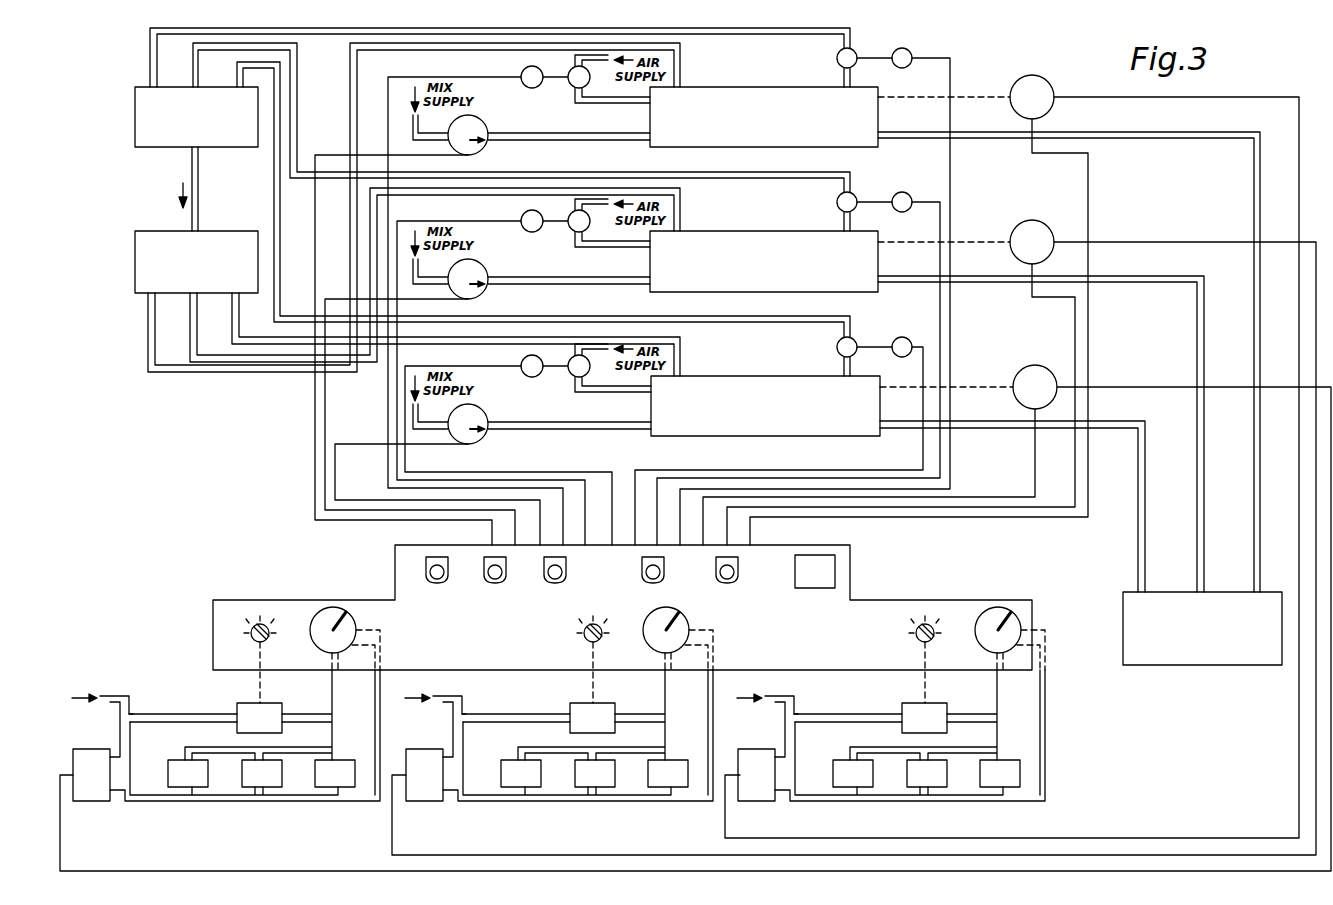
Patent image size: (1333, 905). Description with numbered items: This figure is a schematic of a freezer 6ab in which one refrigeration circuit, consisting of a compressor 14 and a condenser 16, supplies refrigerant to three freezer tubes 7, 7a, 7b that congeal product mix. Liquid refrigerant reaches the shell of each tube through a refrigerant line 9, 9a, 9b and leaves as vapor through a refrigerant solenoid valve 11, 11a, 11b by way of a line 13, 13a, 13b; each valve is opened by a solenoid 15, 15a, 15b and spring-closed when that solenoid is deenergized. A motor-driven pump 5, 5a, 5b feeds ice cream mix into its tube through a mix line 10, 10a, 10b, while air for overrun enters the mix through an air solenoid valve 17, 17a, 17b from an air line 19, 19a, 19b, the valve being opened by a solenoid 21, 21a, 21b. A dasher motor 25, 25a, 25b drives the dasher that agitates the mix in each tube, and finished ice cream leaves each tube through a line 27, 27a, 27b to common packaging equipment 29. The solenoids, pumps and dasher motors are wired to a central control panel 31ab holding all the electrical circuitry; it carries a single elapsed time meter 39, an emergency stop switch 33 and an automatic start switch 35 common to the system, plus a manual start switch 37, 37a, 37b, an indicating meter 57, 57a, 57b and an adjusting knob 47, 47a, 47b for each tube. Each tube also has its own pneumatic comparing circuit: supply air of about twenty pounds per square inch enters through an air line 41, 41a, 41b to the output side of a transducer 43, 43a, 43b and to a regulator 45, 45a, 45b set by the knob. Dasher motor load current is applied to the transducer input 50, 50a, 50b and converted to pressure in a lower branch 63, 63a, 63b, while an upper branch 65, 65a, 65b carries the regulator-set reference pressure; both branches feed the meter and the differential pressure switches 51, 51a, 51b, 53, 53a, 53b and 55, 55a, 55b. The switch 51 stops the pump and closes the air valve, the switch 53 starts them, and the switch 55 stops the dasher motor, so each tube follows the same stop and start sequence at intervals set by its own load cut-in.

The pump 5 is at (486, 121).
The pump 5a is at (486, 266).
The pump 5b is at (486, 411).
The freezer 6ab is at (112, 77).
The freezer tube 7 is at (775, 85).
The freezer tube 7a is at (775, 229).
The freezer tube 7b is at (775, 373).
The refrigerant line 9 is at (160, 378).
The refrigerant line 9a is at (210, 370).
The refrigerant line 9b is at (262, 360).
The mix line 10 is at (505, 145).
The mix line 10a is at (505, 289).
The mix line 10b is at (505, 434).
The refrigerant solenoid valve 11 is at (852, 51).
The refrigerant solenoid valve 11a is at (852, 195).
The refrigerant solenoid valve 11b is at (852, 340).
The line 13 is at (838, 64).
The line 13a is at (838, 208).
The line 13b is at (838, 353).
The compressor 14 is at (135, 120).
The solenoid 15 is at (897, 50).
The solenoid 15a is at (897, 193).
The solenoid 15b is at (897, 338).
The condenser 16 is at (135, 263).
The air solenoid valve 17 is at (572, 87).
The air solenoid valve 17a is at (572, 231).
The air solenoid valve 17b is at (572, 376).
The air line 19 is at (588, 105).
The air line 19a is at (606, 247).
The air line 19b is at (606, 392).
The solenoid 21 is at (521, 73).
The solenoid 21a is at (521, 217).
The solenoid 21b is at (521, 362).
The dasher motor 25 is at (1019, 76).
The dasher motor 25a is at (1022, 221).
The dasher motor 25b is at (1024, 366).
The line 27 is at (1258, 572).
The line 27a is at (1203, 572).
The line 27b is at (1144, 572).
The packaging equipment 29 is at (1180, 665).
The central control panel 31ab is at (852, 567).
The emergency stop switch 33 is at (726, 584).
The automatic start switch 35 is at (652, 584).
The manual start switch 37 is at (554, 584).
The manual start switch 37a is at (494, 584).
The manual start switch 37b is at (436, 584).
The elapsed time meter 39 is at (808, 590).
The air line 41 is at (775, 711).
The air line 41a is at (447, 711).
The air line 41b is at (134, 704).
The transducer 43 is at (910, 752).
The transducer 43a is at (572, 754).
The transducer 43b is at (60, 776).
The regulator 45 is at (938, 705).
The regulator 45a is at (611, 705).
The regulator 45b is at (266, 703).
The adjusting knob 47 is at (904, 659).
The adjusting knob 47a is at (562, 659).
The adjusting knob 47b is at (261, 644).
The transducer input 50 is at (756, 795).
The transducer input 50a is at (423, 798).
The transducer input 50b is at (90, 802).
The differential pressure switch 51 is at (841, 760).
The differential pressure switch 51a is at (507, 760).
The differential pressure switch 51b is at (168, 766).
The differential pressure switch 53 is at (925, 800).
The differential pressure switch 53a is at (591, 802).
The differential pressure switch 53b is at (252, 787).
The differential pressure switch 55 is at (998, 798).
The differential pressure switch 55a is at (666, 799).
The differential pressure switch 55b is at (322, 787).
The meter 57 is at (995, 638).
The meter 57a is at (704, 638).
The meter 57b is at (357, 643).
The lower branch 63 is at (840, 821).
The lower branch 63a is at (509, 823).
The lower branch 63b is at (166, 801).
The upper branch 65 is at (848, 702).
The upper branch 65a is at (516, 702).
The upper branch 65b is at (158, 714).